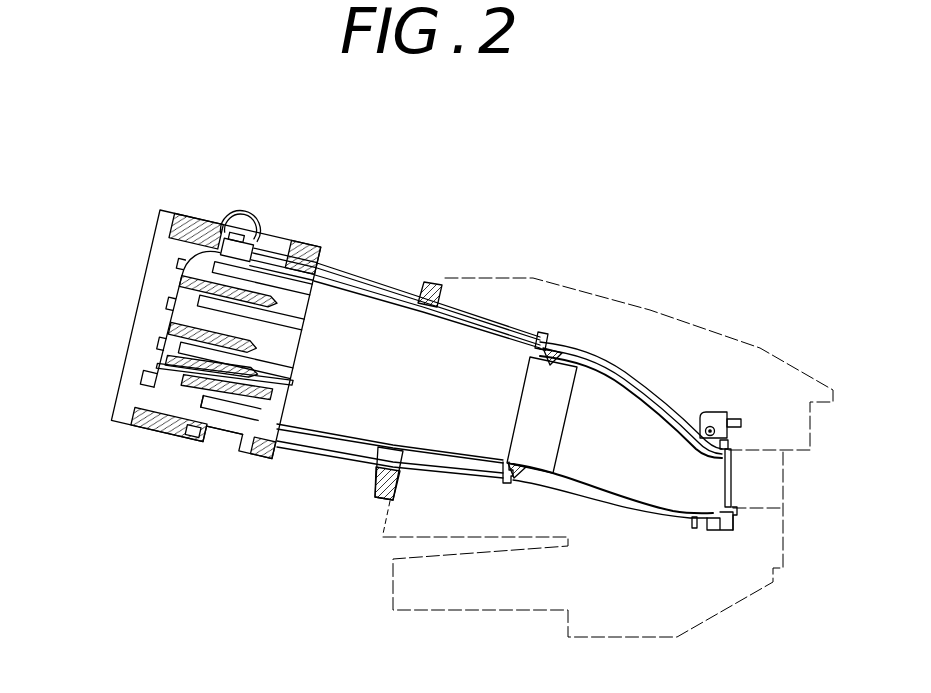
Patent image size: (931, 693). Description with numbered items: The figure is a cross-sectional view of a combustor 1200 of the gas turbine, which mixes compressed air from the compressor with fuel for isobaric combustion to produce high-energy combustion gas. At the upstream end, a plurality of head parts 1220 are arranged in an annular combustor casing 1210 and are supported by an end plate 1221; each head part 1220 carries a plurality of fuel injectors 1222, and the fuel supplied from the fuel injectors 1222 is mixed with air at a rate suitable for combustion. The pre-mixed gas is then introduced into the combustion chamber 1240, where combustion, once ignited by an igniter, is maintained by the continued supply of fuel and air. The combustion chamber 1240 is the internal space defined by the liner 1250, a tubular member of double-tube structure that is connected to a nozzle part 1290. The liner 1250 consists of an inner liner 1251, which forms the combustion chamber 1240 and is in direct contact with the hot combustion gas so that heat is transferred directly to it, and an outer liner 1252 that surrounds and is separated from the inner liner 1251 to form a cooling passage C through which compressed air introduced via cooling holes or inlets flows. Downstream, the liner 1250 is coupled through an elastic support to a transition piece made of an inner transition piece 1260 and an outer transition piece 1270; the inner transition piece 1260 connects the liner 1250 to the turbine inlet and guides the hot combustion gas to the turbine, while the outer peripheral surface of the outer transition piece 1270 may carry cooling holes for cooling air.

The combustor 1200 is at (215, 121).
The head part 1220 is at (145, 301).
The end plate 1221 is at (130, 371).
The fuel injector 1222 is at (170, 322).
The combustor casing 1210 is at (278, 237).
The nozzle part 1290 is at (235, 428).
The liner 1250 is at (380, 274).
The inner liner 1251 is at (340, 275).
The outer liner 1252 is at (401, 285).
The combustion chamber 1240 is at (333, 407).
The inner transition piece 1260 is at (563, 353).
The outer transition piece 1270 is at (583, 347).
The cooling passage C is at (388, 303).